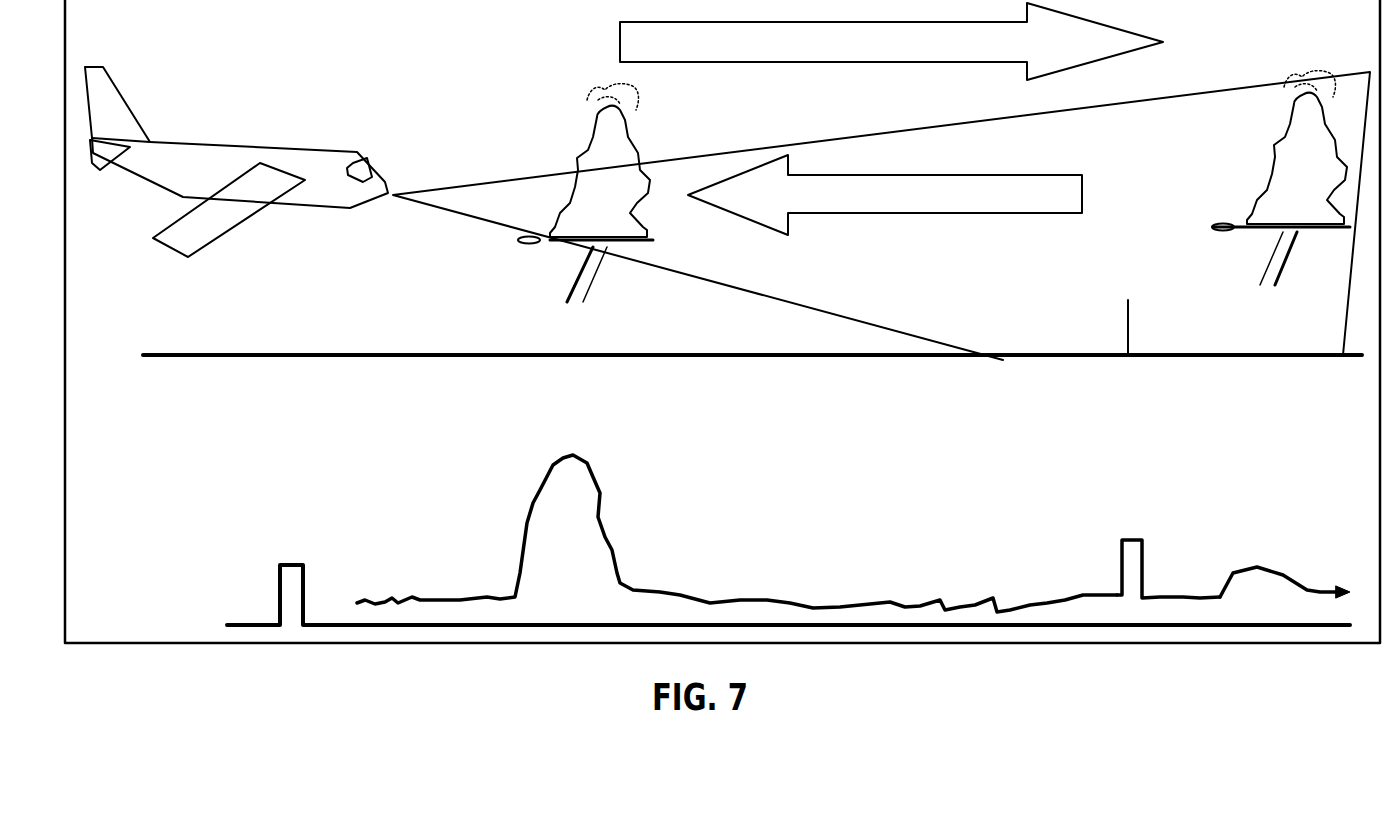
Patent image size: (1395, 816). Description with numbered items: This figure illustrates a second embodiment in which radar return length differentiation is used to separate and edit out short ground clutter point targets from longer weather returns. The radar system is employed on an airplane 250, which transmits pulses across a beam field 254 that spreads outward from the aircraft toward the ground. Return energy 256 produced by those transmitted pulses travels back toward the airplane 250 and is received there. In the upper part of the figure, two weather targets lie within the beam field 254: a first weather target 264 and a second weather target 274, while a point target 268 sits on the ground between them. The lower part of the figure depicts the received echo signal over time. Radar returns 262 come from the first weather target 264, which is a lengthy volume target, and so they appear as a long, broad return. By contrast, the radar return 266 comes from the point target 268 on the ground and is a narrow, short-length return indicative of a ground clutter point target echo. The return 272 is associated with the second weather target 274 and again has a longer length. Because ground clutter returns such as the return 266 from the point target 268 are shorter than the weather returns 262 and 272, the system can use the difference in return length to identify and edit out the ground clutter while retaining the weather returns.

The airplane 250 is at (208, 143).
The beam field 254 is at (483, 173).
The return energy 256 is at (847, 175).
The radar returns 262 is at (540, 490).
The weather target 264 is at (633, 130).
The radar return 266 is at (1130, 537).
The point target 268 is at (1130, 323).
The return 272 is at (1247, 568).
The weather target 274 is at (1267, 157).